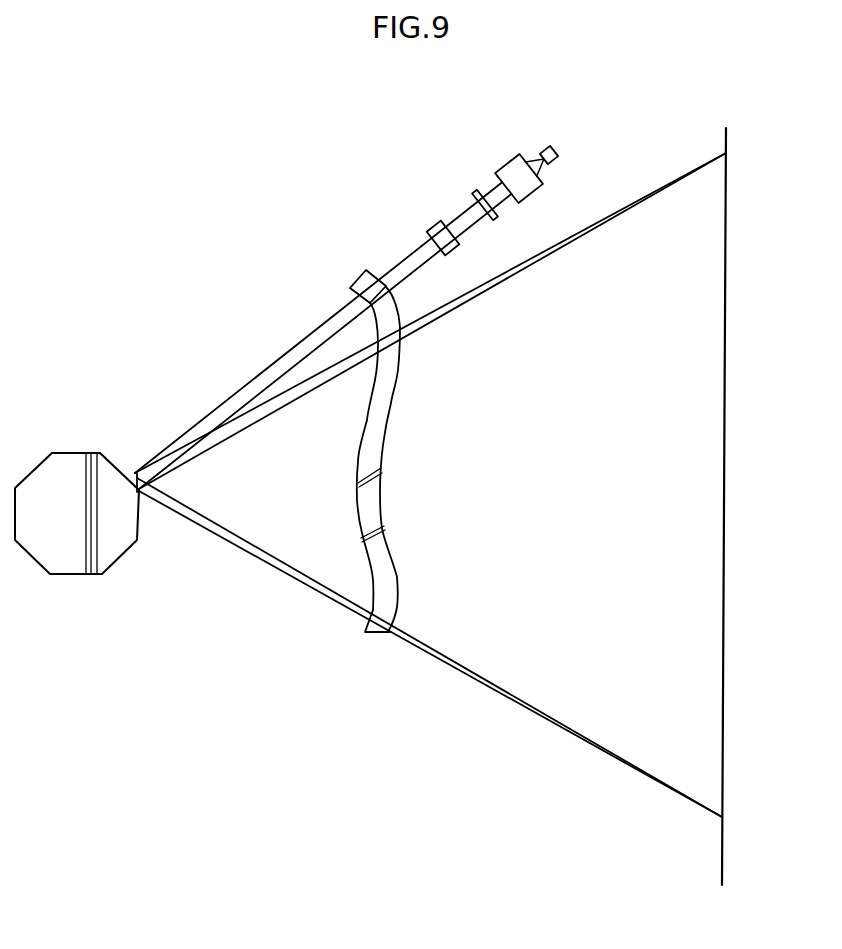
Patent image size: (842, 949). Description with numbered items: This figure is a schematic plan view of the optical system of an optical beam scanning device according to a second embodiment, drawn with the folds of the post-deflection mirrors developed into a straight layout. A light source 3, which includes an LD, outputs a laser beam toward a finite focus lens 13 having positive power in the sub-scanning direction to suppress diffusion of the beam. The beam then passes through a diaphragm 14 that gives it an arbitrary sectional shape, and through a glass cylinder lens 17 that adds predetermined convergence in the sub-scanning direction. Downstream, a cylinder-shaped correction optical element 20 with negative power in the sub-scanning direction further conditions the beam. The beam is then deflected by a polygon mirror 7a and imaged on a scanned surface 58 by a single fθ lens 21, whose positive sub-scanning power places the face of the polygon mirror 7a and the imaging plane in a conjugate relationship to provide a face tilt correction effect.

The light source 3 is at (554, 148).
The finite focus lens 13 is at (507, 158).
The diaphragm 14 is at (474, 192).
The cylinder lens 17 is at (433, 223).
The correction optical element 20 is at (365, 273).
The fθ lens 21 is at (383, 450).
The scanned surface 58 is at (725, 573).
The polygon mirror 7a is at (72, 576).